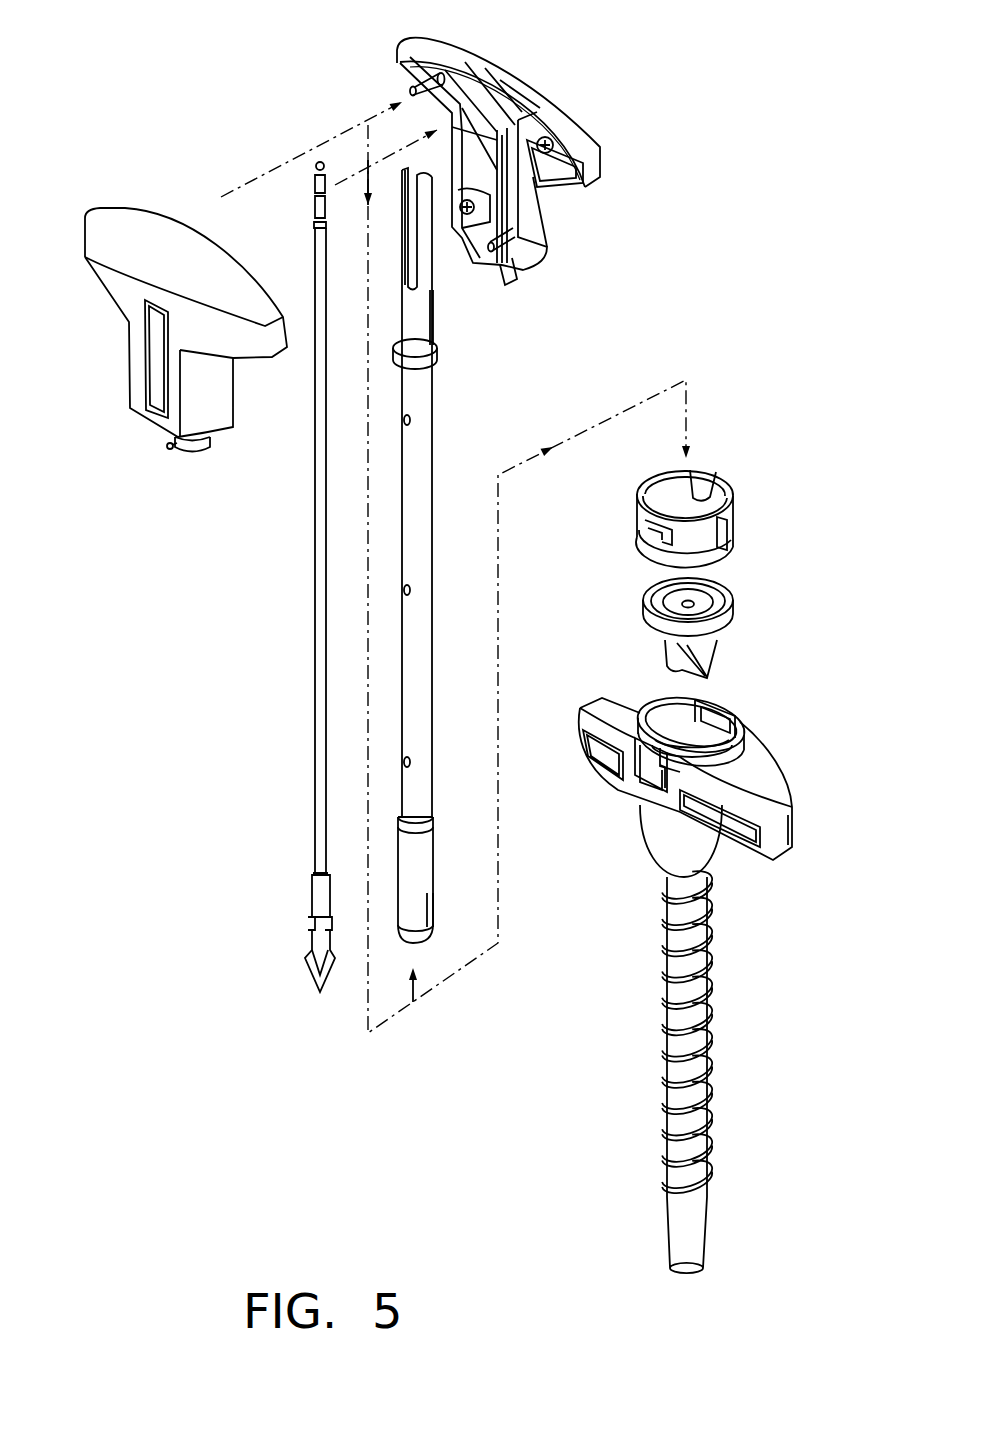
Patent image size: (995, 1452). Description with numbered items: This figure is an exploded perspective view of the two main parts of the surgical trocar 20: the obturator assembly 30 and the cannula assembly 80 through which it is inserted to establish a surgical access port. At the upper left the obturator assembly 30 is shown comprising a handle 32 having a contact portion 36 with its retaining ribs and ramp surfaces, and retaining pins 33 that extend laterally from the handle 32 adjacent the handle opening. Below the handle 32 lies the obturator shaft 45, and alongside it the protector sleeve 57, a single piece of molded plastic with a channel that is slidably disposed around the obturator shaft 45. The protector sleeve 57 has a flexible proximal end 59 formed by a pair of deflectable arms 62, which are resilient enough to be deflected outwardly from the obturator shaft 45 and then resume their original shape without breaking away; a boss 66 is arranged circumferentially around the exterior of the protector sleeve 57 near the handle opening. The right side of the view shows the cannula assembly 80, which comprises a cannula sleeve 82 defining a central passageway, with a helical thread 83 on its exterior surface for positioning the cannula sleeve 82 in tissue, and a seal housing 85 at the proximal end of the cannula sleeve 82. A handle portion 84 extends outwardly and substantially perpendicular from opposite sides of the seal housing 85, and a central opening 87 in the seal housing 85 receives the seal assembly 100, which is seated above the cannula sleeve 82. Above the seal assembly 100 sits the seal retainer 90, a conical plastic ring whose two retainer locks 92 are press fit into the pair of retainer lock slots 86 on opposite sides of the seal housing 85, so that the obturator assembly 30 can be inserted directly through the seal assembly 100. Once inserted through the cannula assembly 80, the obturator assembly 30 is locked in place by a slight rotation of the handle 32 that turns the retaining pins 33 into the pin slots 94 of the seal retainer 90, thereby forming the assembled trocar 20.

The surgical trocar 20 is at (670, 238).
The obturator assembly 30 is at (562, 45).
The handle 32 is at (138, 222).
The retaining pins 33 is at (168, 450).
The contact portion 36 is at (527, 130).
The obturator shaft 45 is at (314, 562).
The protector sleeve 57 is at (432, 468).
The flexible proximal end 59 is at (400, 257).
The deflectable arms 62 is at (428, 272).
The boss 66 is at (438, 350).
The cannula assembly 80 is at (735, 948).
The cannula sleeve 82 is at (697, 1043).
The helical thread 83 is at (668, 1057).
The handle portion 84 is at (770, 793).
The seal housing 85 is at (667, 810).
The retainer lock slots 86 is at (645, 780).
The central opening 87 is at (688, 730).
The seal retainer 90 is at (733, 515).
The retainer locks 92 is at (645, 530).
The pin slots 94 is at (702, 470).
The seal assembly 100 is at (730, 595).